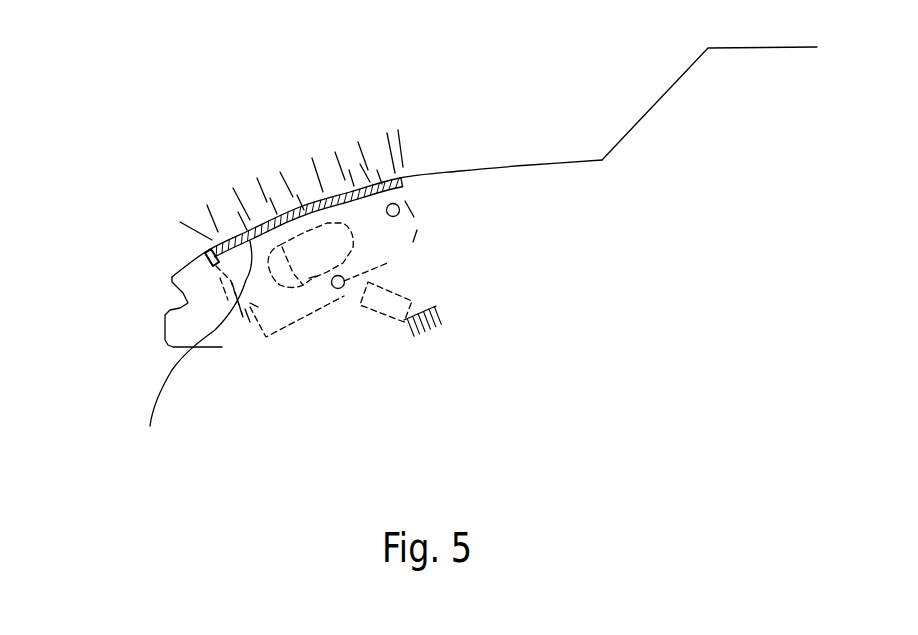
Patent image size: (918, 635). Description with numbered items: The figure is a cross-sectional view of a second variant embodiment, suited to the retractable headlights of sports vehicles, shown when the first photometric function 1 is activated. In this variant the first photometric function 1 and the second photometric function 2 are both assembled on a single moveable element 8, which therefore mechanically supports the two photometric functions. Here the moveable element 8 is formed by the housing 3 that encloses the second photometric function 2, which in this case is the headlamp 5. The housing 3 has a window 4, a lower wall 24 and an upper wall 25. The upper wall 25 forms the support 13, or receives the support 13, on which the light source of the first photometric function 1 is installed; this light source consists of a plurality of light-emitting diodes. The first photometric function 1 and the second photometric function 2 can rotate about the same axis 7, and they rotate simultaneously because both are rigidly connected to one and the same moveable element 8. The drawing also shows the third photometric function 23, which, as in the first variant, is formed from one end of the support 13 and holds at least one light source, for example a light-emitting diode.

The first photometric function 1 is at (302, 205).
The second photometric function 2 is at (397, 257).
The housing 3 is at (417, 230).
The window 4 is at (250, 313).
The headlamp 5 is at (312, 277).
The axis 7 is at (394, 203).
The moveable element 8 is at (413, 208).
The support 13 is at (328, 195).
The third photometric function 23 is at (212, 248).
The lower wall 24 is at (339, 290).
The upper wall 25 is at (192, 350).